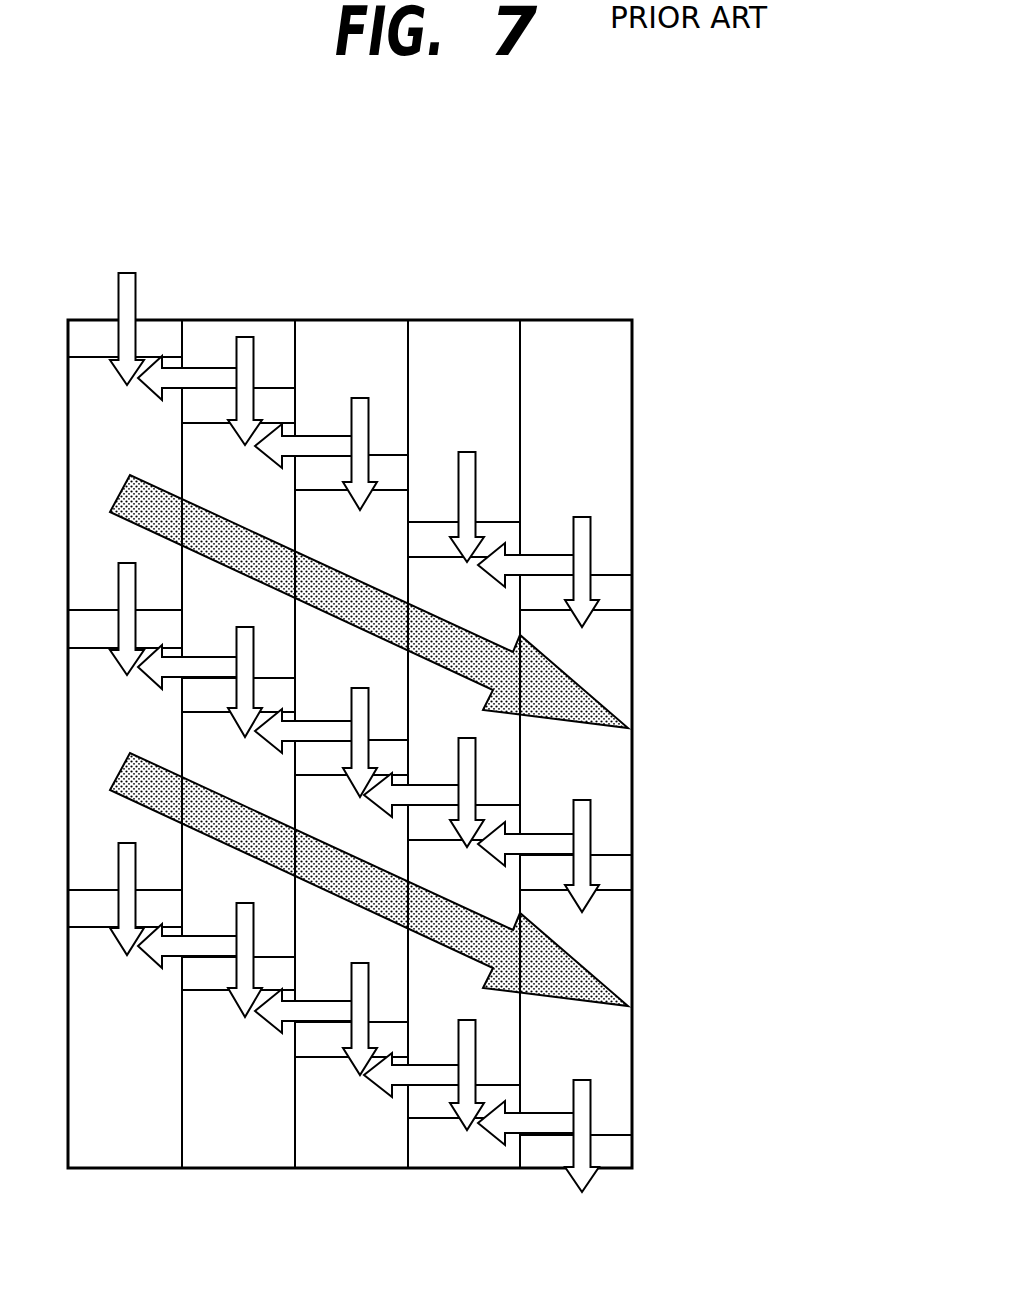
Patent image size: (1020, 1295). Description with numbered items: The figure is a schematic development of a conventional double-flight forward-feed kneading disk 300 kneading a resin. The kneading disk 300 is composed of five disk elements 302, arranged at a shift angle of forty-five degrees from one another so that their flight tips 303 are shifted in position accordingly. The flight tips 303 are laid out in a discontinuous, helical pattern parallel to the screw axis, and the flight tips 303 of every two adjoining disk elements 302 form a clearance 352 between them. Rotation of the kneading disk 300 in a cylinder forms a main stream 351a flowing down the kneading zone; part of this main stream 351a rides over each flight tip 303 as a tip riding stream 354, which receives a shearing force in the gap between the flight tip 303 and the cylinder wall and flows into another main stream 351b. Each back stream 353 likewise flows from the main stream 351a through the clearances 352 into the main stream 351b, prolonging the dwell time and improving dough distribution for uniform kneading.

The kneading disk 300 is at (720, 174).
The disk element 302 is at (141, 408).
The flight tip 303 is at (612, 585).
The clearance 352 is at (410, 500).
The back stream 353 is at (542, 553).
The tip riding stream 354 is at (580, 591).
The main stream 351a is at (654, 615).
The main stream 351b is at (654, 888).